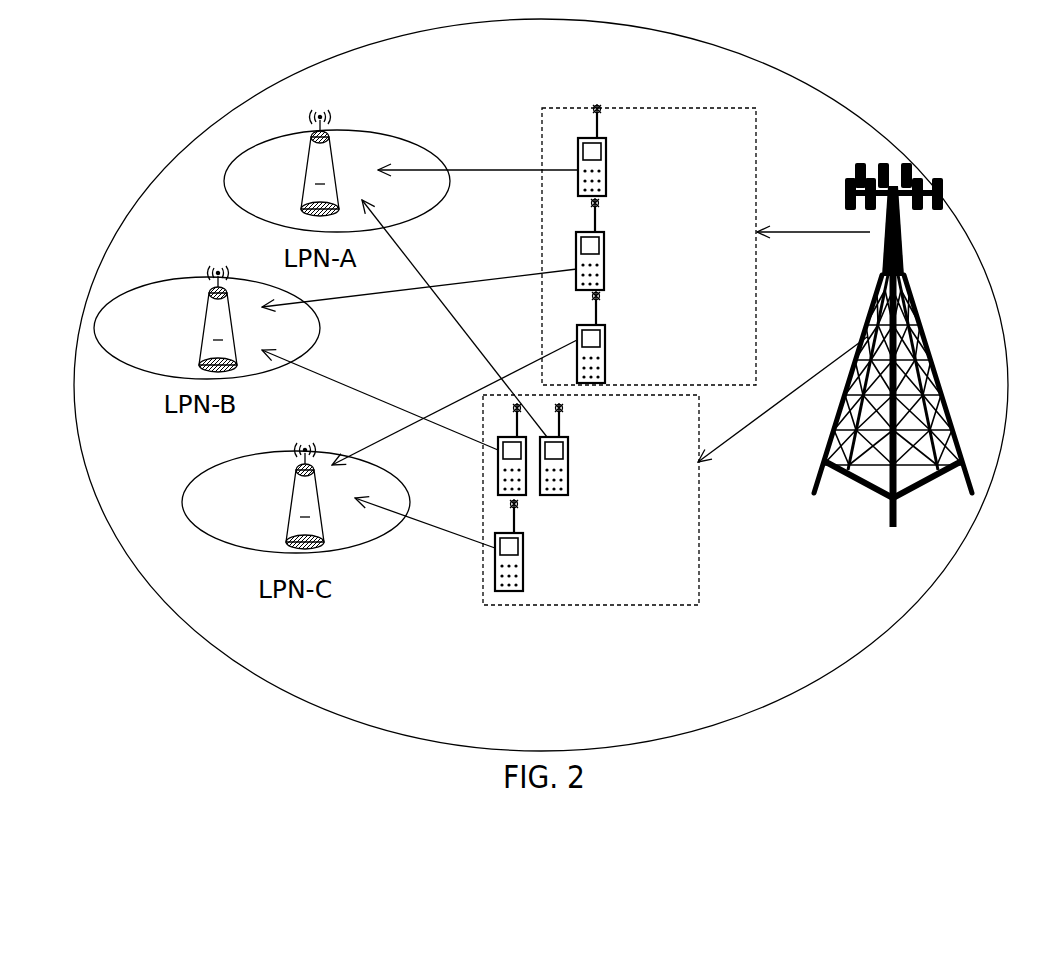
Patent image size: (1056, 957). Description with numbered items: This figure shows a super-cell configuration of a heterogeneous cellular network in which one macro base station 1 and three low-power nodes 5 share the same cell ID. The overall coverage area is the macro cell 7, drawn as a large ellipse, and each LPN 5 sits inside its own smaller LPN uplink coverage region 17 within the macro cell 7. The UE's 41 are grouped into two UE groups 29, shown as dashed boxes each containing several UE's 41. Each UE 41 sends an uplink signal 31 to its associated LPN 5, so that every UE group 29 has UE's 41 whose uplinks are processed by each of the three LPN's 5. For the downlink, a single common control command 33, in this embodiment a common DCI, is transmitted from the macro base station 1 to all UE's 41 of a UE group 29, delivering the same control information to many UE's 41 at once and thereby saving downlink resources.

The macro base station 1 is at (928, 343).
The low-power node 5 is at (269, 329).
The macro cell 7 is at (888, 605).
The LPN uplink coverage region 17 is at (378, 139).
The UE group 29 is at (748, 133).
The uplink signal 31 is at (511, 168).
The common control command 33 is at (813, 229).
The UE 41 is at (607, 152).